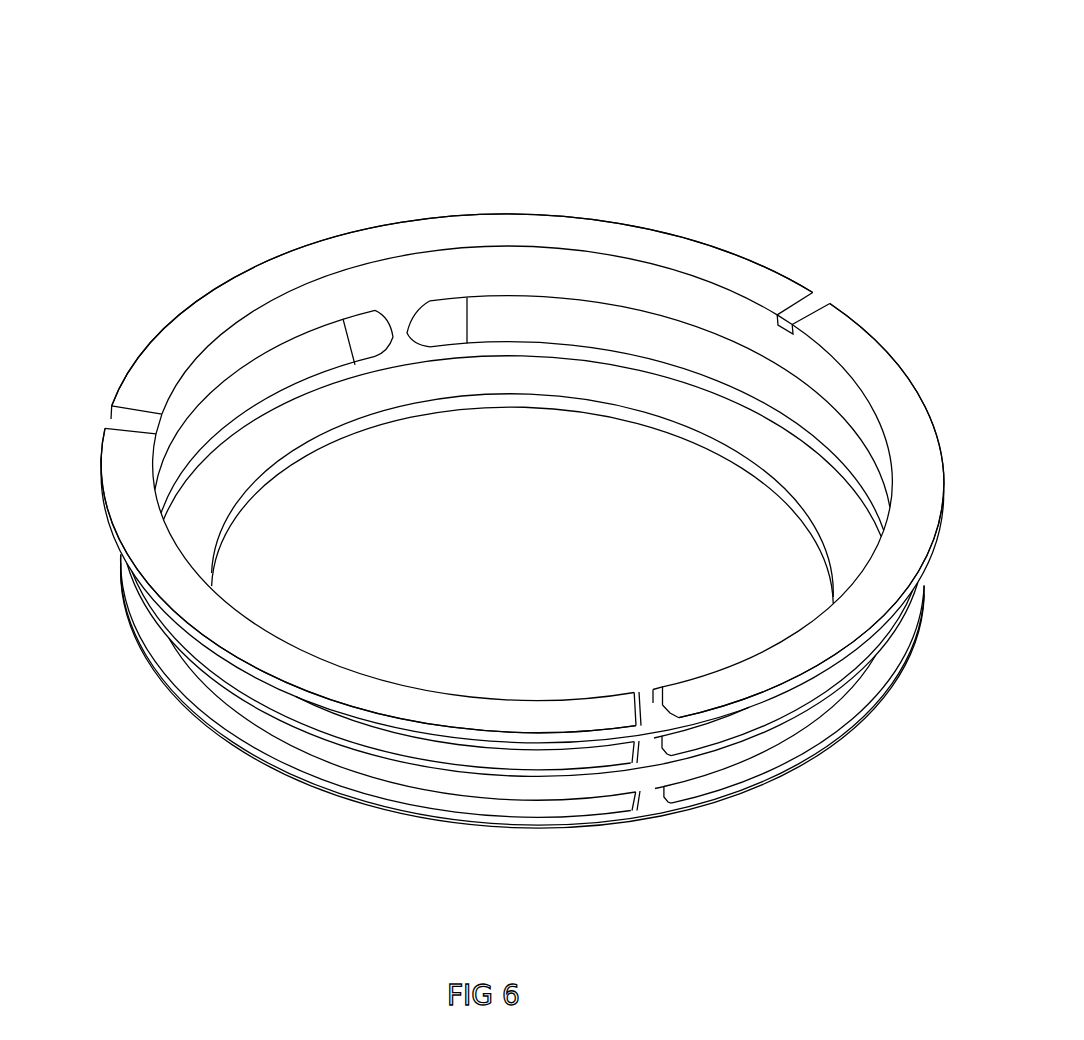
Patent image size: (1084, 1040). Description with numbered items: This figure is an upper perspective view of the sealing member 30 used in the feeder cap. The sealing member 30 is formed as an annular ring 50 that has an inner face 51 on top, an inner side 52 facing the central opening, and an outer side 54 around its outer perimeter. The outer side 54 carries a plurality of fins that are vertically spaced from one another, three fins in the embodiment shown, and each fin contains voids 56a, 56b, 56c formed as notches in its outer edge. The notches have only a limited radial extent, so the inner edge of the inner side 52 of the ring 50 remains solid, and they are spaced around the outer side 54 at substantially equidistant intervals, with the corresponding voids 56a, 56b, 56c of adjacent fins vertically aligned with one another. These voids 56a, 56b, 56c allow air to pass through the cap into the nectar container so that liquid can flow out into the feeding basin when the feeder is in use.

The sealing member 30 is at (765, 120).
The annular ring 50 is at (305, 243).
The inner face 51 is at (586, 232).
The inner side 52 is at (243, 617).
The outer side 54 is at (898, 352).
The void 56a is at (110, 410).
The void 56b is at (805, 300).
The void 56c is at (652, 815).